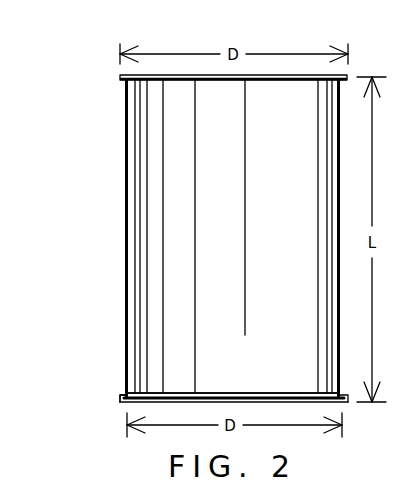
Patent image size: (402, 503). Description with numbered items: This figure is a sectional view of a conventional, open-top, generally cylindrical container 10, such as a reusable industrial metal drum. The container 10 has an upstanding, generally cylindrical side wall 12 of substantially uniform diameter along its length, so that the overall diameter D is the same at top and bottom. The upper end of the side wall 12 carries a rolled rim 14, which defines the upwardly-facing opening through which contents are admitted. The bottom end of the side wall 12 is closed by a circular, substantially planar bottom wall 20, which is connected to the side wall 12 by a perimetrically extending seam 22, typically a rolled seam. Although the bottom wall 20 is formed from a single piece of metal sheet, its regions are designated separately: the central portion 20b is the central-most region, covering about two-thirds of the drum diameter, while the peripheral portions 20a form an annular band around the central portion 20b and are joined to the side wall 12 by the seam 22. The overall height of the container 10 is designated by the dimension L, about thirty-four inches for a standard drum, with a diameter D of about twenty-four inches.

The container 10 is at (100, 112).
The side wall 12 is at (152, 196).
The rolled rim 14 is at (153, 75).
The bottom wall 20 is at (217, 403).
The peripheral portions 20a is at (140, 393).
The central portion 20b is at (237, 392).
The seam 22 is at (120, 398).